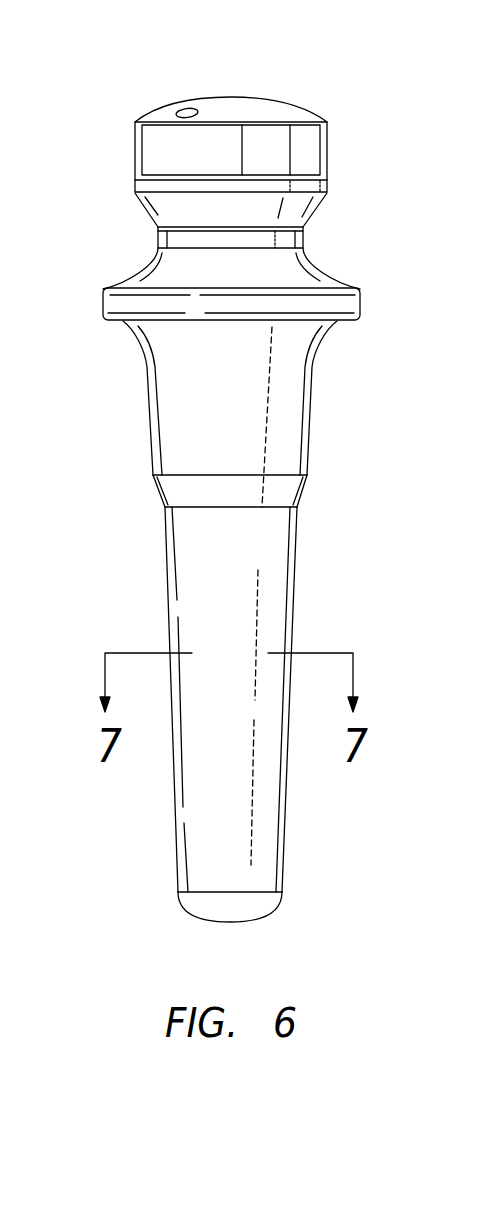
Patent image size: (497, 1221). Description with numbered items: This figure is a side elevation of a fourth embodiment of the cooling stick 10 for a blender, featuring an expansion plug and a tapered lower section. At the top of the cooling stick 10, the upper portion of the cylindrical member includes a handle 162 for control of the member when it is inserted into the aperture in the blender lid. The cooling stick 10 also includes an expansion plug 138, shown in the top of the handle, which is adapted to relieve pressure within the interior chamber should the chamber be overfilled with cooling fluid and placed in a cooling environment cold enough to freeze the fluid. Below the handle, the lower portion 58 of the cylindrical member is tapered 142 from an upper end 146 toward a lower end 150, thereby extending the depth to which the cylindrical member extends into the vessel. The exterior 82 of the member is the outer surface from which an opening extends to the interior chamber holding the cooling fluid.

The cooling stick 10 is at (366, 247).
The expansion plug 138 is at (180, 113).
The handle 162 is at (295, 115).
The upper end 146 is at (140, 347).
The lower portion 58 is at (295, 570).
The tapered 142 is at (287, 778).
The lower end 150 is at (282, 897).
The exterior 82 is at (483, 440).